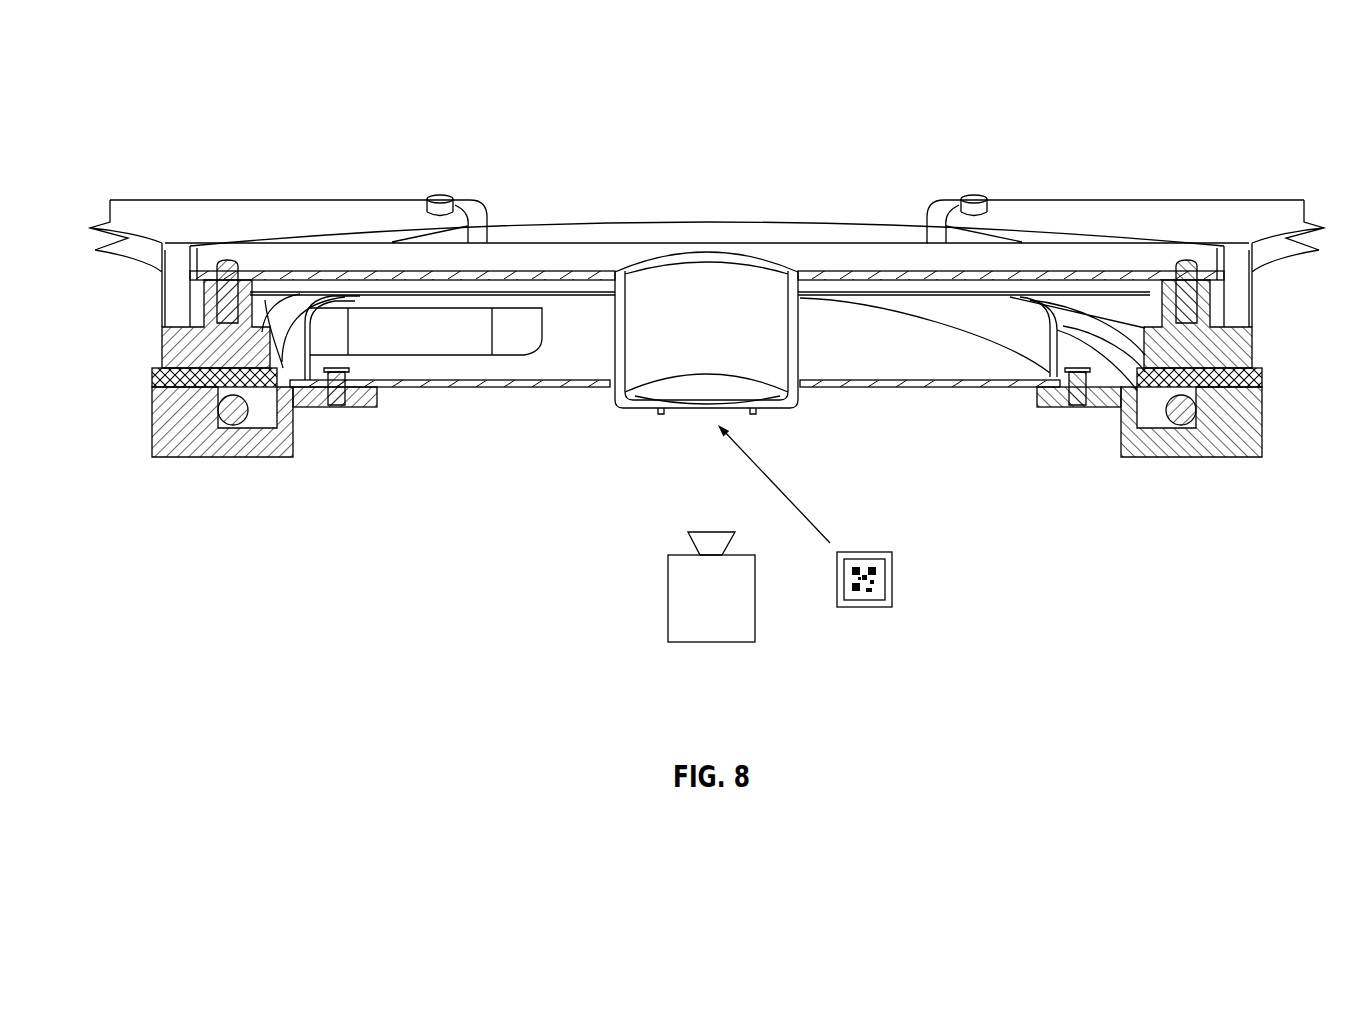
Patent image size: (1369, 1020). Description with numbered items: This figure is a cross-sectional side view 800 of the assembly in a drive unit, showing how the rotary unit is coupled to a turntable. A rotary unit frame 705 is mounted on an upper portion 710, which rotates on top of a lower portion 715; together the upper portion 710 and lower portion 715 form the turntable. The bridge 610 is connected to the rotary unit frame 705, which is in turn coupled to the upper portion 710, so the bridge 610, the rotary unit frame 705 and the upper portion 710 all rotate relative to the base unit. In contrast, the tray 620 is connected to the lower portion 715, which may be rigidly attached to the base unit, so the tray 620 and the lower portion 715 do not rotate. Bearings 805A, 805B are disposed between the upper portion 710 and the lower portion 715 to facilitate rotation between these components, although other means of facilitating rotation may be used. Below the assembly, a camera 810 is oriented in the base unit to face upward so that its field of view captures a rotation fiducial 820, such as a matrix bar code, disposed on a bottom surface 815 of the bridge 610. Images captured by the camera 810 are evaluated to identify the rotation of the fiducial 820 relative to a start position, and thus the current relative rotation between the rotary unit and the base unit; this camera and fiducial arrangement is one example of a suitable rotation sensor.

The cross-sectional side view 800 is at (1158, 112).
The rotary unit frame 705 is at (295, 210).
The bridge 610 is at (707, 304).
The tray 620 is at (555, 388).
The bottom surface 815 is at (782, 409).
The upper portion 710 is at (155, 380).
The lower portion 715 is at (283, 458).
The bearing 805A is at (1182, 426).
The bearing 805B is at (235, 426).
The camera 810 is at (668, 603).
The rotation fiducial 820 is at (892, 578).